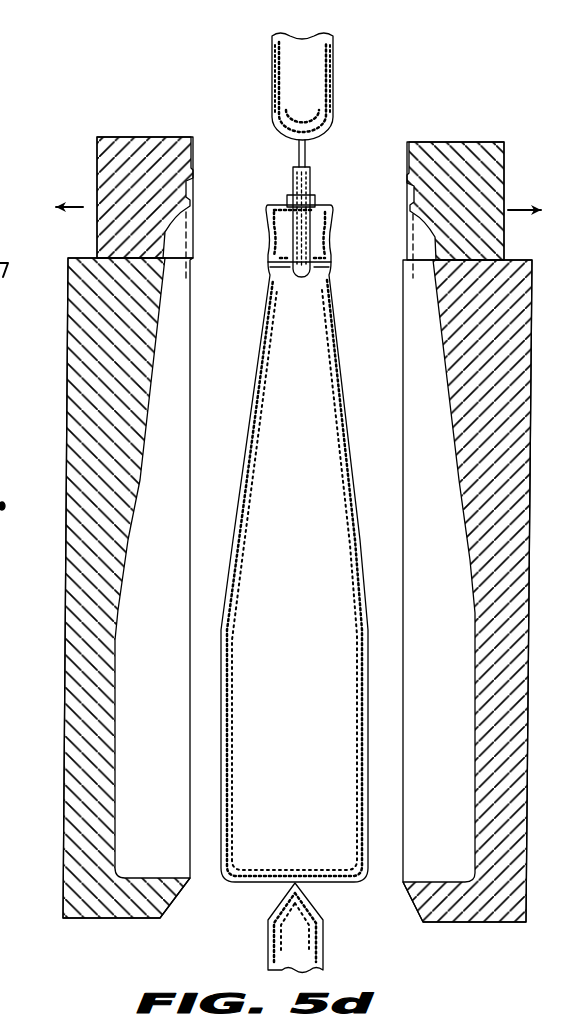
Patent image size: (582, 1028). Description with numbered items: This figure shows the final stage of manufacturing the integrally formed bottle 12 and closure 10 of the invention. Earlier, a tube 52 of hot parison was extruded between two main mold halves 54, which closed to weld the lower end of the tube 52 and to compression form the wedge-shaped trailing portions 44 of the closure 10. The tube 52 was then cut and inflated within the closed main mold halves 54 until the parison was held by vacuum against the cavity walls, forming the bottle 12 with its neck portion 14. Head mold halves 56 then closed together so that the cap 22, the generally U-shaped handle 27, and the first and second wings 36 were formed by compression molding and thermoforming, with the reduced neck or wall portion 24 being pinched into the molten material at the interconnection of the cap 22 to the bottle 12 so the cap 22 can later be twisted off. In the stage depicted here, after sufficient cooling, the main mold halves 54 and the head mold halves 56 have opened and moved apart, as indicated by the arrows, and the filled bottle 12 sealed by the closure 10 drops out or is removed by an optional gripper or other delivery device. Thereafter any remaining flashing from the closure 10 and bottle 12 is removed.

The closure 10 is at (324, 186).
The bottle 12 is at (309, 534).
The neck portion 14 is at (325, 437).
The cap 22 is at (295, 193).
The reduced neck or wall portion 24 is at (290, 207).
The handle 27 is at (312, 164).
The wings 36 is at (313, 232).
The trailing portion 44 is at (280, 272).
The tube of hot parison 52 is at (333, 63).
The main mold halves 54 is at (80, 822).
The head mold halves 56 is at (97, 185).